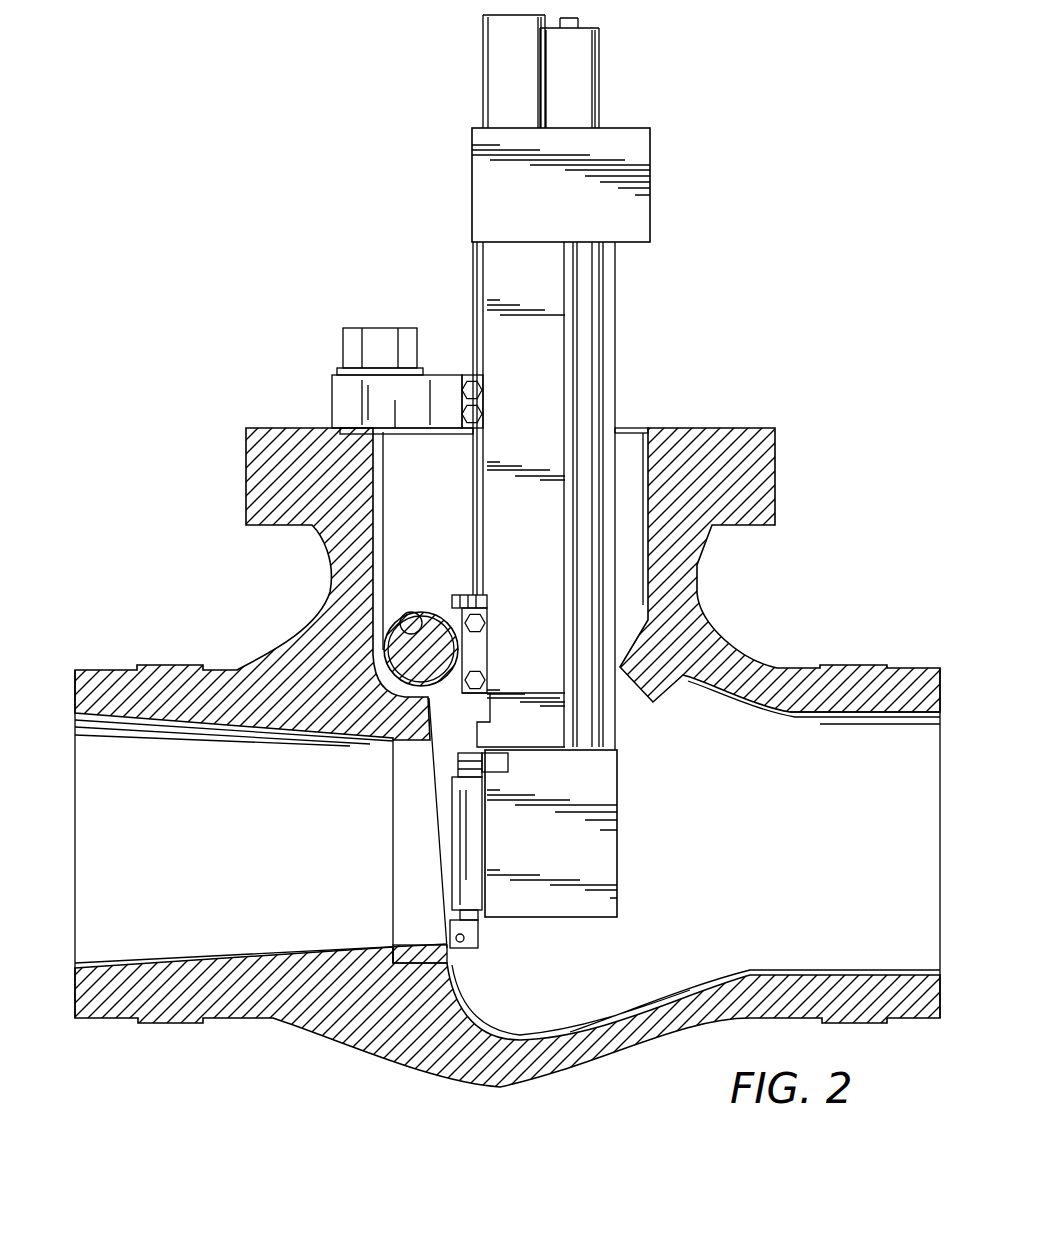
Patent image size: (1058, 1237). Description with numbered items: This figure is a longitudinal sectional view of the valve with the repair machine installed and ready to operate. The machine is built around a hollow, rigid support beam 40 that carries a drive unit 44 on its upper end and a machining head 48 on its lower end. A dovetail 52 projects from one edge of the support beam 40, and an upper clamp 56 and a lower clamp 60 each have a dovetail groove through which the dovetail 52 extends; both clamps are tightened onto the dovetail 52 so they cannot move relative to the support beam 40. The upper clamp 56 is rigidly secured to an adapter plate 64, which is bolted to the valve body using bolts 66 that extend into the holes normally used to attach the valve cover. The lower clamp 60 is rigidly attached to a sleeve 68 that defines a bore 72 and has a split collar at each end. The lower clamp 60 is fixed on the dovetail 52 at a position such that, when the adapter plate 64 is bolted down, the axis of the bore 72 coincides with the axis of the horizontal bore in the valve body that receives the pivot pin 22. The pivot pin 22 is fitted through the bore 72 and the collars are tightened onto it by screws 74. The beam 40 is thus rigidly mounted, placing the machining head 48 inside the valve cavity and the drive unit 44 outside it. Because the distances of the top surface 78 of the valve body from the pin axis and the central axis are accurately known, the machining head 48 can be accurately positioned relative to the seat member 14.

The seat member 14 is at (410, 748).
The pivot pin 22 is at (404, 655).
The support beam 40 is at (615, 338).
The drive unit 44 is at (650, 188).
The machining head 48 is at (572, 918).
The dovetail 52 is at (472, 272).
The upper clamp 56 is at (464, 388).
The lower clamp 60 is at (490, 640).
The adapter plate 64 is at (406, 418).
The bolts 66 is at (360, 328).
The sleeve 68 is at (420, 612).
The bore 72 is at (424, 625).
The screws 74 is at (468, 595).
The top surface 78 is at (767, 428).